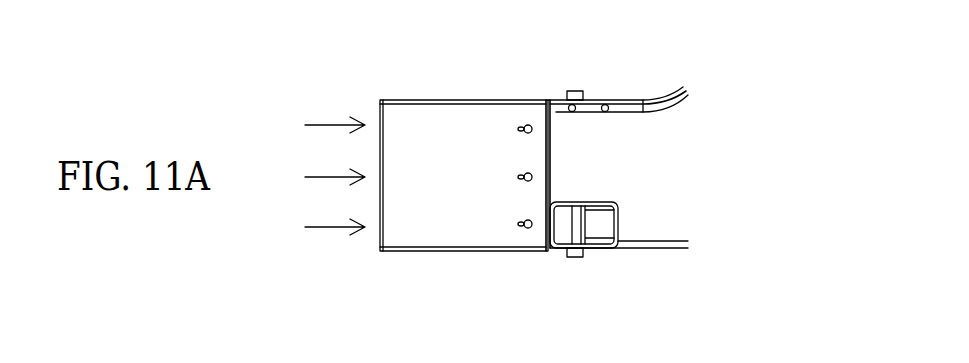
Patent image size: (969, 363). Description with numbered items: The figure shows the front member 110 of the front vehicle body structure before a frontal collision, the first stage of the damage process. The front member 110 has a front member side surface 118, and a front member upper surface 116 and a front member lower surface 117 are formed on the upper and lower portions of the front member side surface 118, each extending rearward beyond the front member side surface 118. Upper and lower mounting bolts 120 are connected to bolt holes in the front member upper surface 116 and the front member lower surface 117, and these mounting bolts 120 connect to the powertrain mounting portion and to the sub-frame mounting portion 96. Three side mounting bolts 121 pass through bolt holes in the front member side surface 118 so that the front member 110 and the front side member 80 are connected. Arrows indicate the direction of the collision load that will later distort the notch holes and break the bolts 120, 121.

The front member 110 is at (432, 97).
The front member side surface 118 is at (446, 232).
The front member upper surface 116 is at (601, 99).
The front side member 80 is at (628, 92).
The upper and lower mounting bolts 120 is at (572, 91).
The side mounting bolt 121 is at (524, 133).
The front member lower surface 117 is at (596, 253).
The sub-frame mounting portion 96 is at (604, 254).